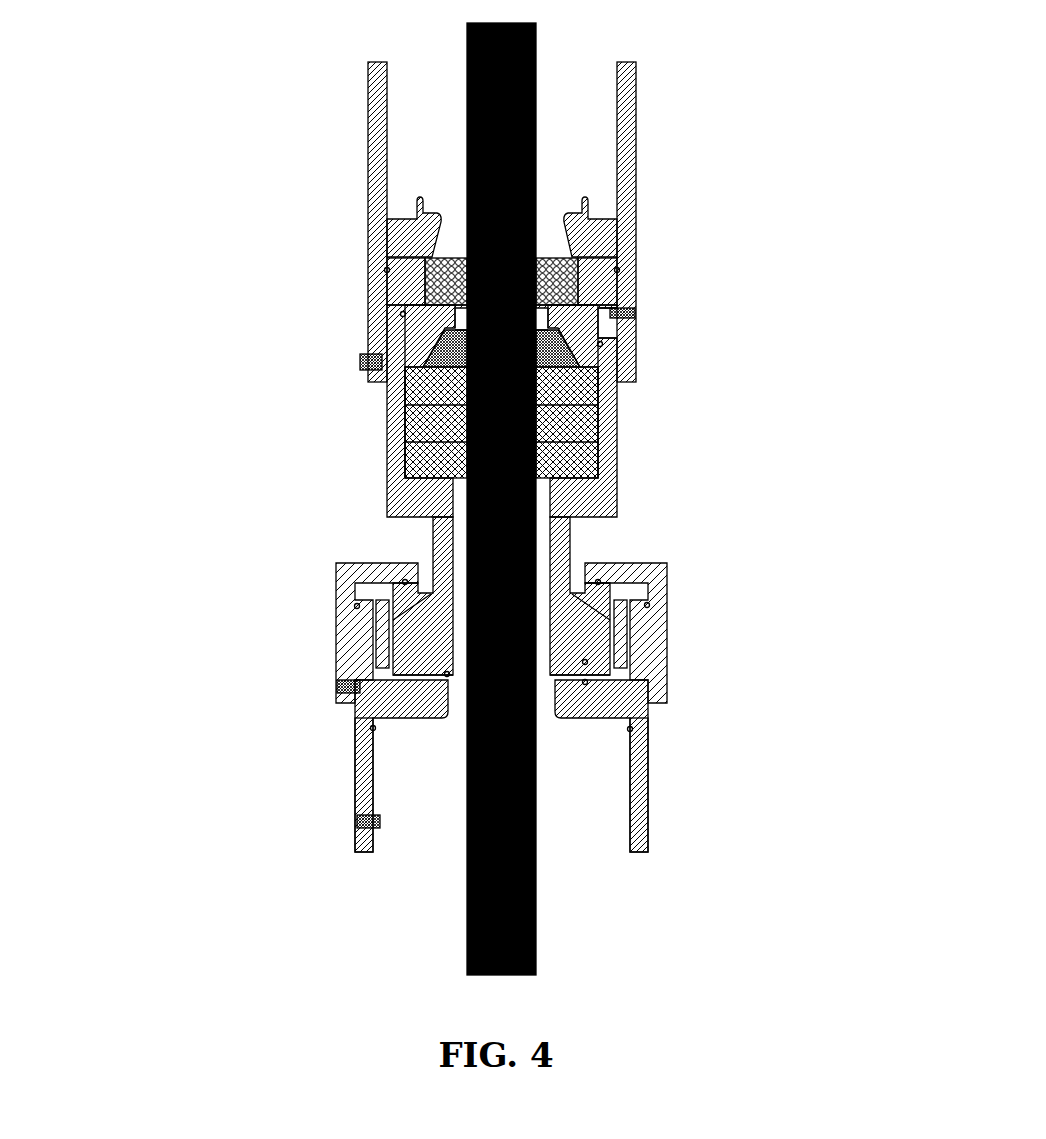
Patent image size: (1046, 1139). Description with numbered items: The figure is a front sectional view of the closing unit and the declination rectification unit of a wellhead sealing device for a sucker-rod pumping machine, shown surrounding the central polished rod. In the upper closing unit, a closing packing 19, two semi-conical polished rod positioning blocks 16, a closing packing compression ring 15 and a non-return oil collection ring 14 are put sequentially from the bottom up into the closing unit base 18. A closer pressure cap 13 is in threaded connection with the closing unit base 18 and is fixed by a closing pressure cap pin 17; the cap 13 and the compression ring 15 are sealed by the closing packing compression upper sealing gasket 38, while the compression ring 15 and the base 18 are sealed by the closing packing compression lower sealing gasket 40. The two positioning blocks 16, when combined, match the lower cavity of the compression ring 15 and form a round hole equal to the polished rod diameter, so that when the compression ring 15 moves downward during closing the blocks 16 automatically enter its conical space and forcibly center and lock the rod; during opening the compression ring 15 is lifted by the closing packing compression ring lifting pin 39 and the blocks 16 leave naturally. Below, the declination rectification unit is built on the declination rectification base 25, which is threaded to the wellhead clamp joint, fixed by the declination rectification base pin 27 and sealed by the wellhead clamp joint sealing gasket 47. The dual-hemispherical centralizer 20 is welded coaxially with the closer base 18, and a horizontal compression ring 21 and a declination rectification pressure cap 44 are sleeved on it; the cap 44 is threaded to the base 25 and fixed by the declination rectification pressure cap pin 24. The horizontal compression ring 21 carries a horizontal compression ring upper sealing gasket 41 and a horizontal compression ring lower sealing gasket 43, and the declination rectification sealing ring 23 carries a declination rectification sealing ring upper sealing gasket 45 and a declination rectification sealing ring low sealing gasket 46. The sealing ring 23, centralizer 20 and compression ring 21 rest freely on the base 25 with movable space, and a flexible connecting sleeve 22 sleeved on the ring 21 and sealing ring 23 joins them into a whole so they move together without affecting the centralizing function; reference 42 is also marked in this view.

The closer pressure cap 13 is at (380, 243).
The non-return oil collection ring 14 is at (387, 283).
The closing packing compression ring 15 is at (416, 318).
The semi-conical polished rod positioning blocks 16 is at (433, 350).
The closing pressure cap pin 17 is at (361, 362).
The closing unit base 18 is at (393, 412).
The closing packing 19 is at (437, 462).
The dual-hemispherical centralizer 20 is at (433, 555).
The horizontal compression ring 21 is at (403, 605).
The flexible connecting sleeve 22 is at (357, 627).
The declination rectification sealing ring 23 is at (445, 673).
The declination rectification pressure cap pin 24 is at (345, 687).
The declination rectification base 25 is at (371, 728).
The declination rectification base pin 27 is at (358, 822).
The closing packing compression upper sealing gasket 38 is at (617, 271).
The closing packing compression ring lifting pin 39 is at (635, 313).
The closing packing compression lower sealing gasket 40 is at (602, 345).
The horizontal compression ring upper sealing gasket 41 is at (600, 582).
The bolt 42 is at (649, 605).
The horizontal compression ring lower sealing gasket 43 is at (604, 608).
The declination rectification pressure cap 44 is at (667, 638).
The declination rectification sealing ring upper sealing gasket 45 is at (587, 662).
The declination rectification sealing ring low sealing gasket 46 is at (587, 682).
The wellhead clamp joint sealing gasket 47 is at (632, 729).